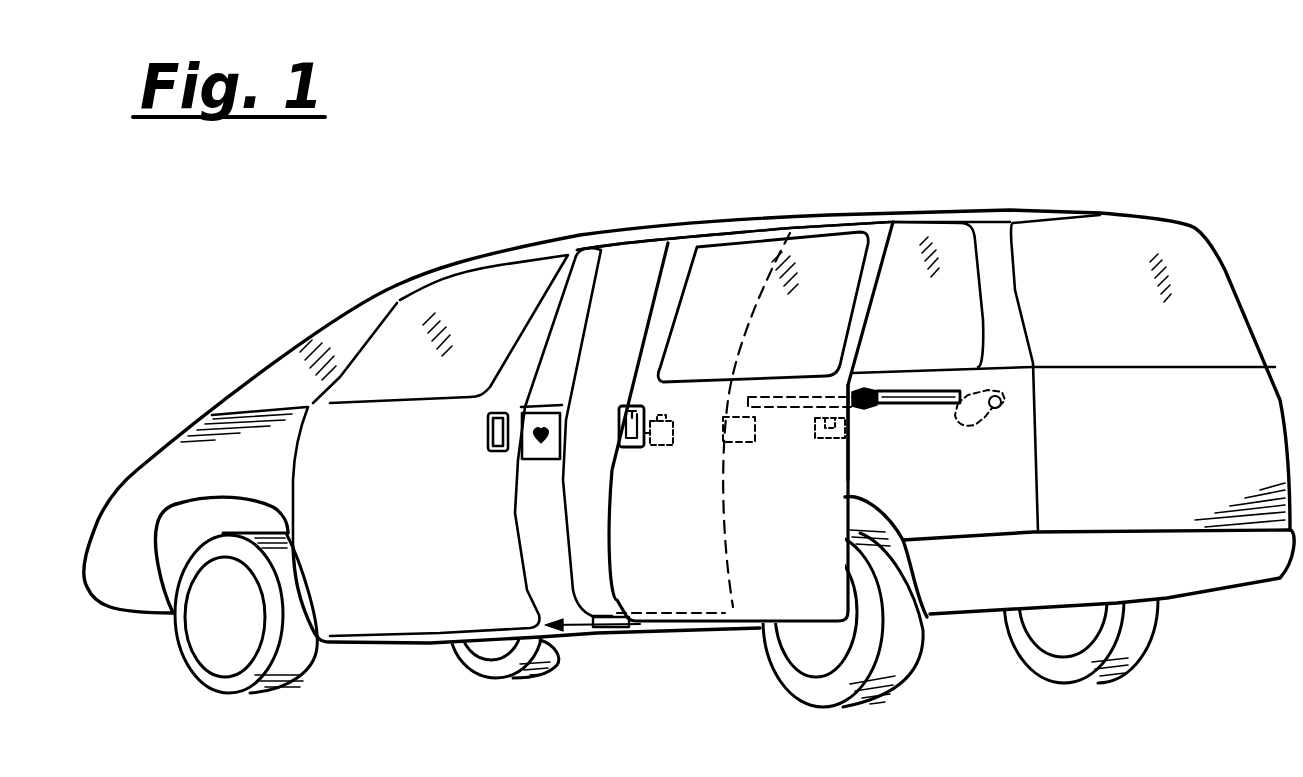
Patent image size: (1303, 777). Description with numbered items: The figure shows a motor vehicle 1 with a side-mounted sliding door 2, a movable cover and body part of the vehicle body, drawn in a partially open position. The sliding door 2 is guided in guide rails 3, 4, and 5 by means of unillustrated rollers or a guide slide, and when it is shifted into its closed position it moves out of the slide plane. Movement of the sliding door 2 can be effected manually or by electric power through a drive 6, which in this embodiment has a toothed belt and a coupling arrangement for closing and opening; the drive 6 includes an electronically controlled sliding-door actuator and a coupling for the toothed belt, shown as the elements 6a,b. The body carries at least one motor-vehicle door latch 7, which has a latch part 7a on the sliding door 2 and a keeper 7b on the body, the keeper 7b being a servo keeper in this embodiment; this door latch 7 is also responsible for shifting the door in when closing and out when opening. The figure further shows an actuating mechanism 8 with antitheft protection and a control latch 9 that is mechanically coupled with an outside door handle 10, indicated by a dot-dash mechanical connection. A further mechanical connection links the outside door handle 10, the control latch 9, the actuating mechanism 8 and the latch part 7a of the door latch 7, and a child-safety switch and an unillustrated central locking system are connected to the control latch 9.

The motor vehicle 1 is at (512, 203).
The sliding door 2 is at (807, 607).
The guide rail 3 is at (643, 247).
The guide rail 4 is at (923, 396).
The guide rail 5 is at (610, 627).
The drive 6 is at (877, 385).
The sliding-door actuator and coupling 6a,b is at (988, 417).
The motor-vehicle door latch 7 is at (830, 450).
The latch part 7a is at (833, 400).
The keeper 7b is at (740, 445).
The actuating mechanism 8 is at (815, 430).
The control latch 9 is at (660, 450).
The outside door handle 10 is at (617, 407).